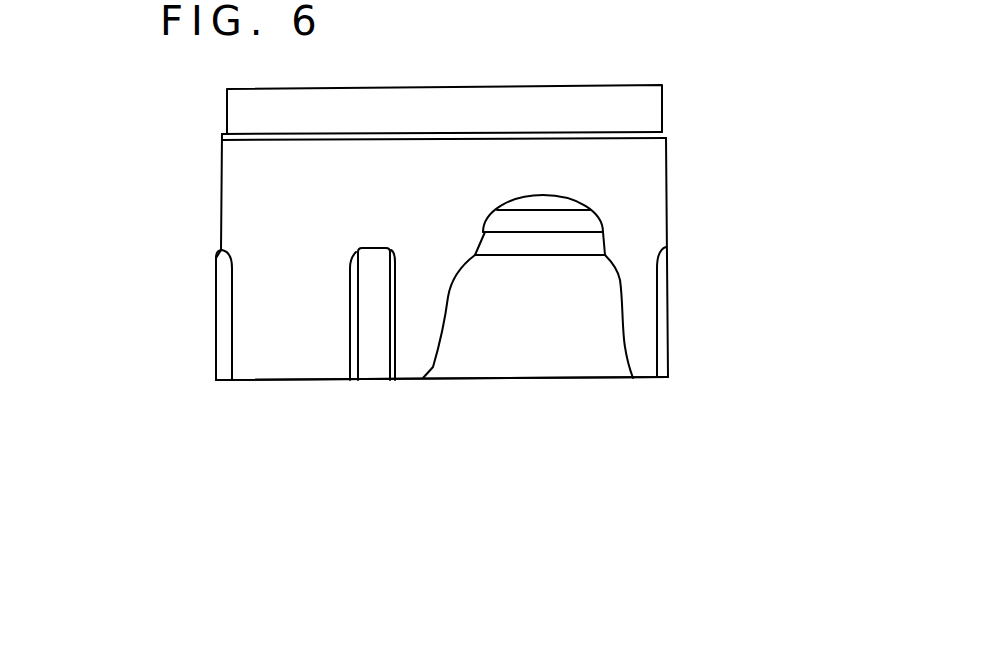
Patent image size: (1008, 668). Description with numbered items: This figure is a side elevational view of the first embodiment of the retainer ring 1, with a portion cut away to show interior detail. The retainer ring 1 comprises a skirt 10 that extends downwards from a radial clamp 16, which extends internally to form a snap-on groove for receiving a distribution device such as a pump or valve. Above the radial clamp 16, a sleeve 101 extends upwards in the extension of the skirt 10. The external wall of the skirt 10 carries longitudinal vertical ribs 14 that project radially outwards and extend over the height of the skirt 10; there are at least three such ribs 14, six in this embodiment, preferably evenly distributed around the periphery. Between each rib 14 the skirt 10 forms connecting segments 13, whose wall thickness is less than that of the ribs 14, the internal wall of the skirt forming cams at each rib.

The retainer ring 1 is at (461, 311).
The skirt 10 is at (280, 328).
The connecting segments 13 is at (300, 357).
The longitudinal vertical ribs 14 is at (375, 302).
The radial clamp 16 is at (542, 217).
The sleeve 101 is at (650, 162).